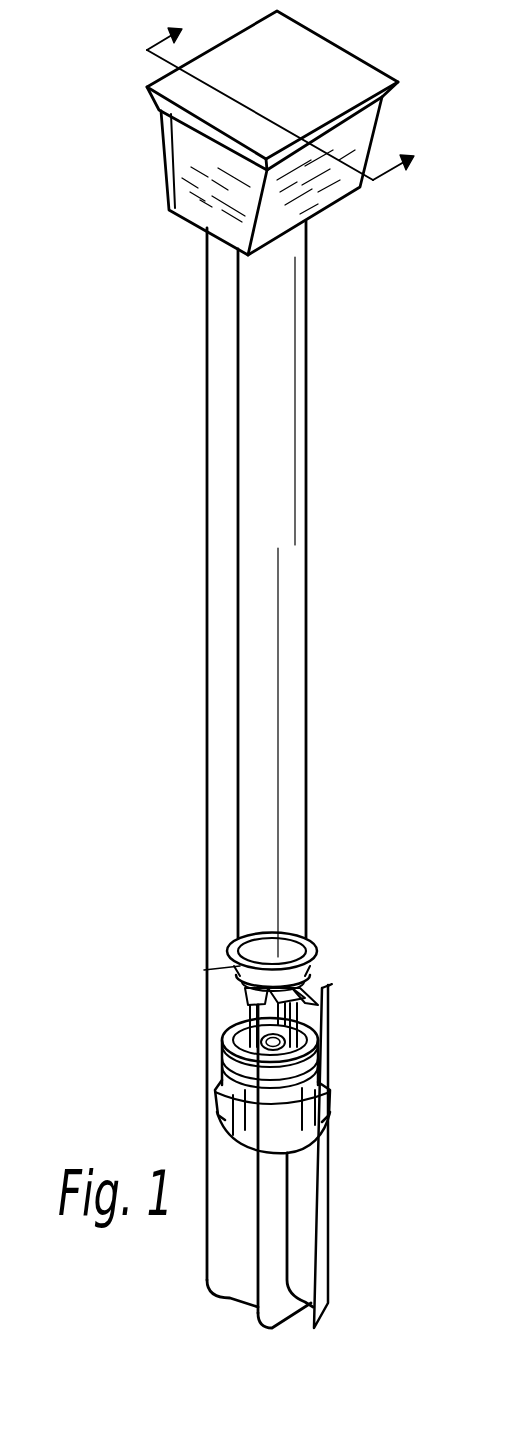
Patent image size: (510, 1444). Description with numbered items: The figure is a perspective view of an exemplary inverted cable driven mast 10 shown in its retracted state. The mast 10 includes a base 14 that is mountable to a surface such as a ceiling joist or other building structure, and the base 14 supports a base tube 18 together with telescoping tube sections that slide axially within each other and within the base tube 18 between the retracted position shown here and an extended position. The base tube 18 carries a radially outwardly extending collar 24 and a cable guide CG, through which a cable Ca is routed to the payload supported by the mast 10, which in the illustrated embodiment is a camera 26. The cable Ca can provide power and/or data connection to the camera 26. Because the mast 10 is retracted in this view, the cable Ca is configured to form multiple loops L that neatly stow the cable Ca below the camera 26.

The inverted cable driven mast 10 is at (130, 303).
The base 14 is at (337, 77).
The base tube 18 is at (288, 513).
The collar 24 is at (317, 945).
The camera 26 is at (215, 1092).
The cable Ca is at (207, 720).
The cable guide CG is at (212, 968).
The loops L is at (228, 1305).